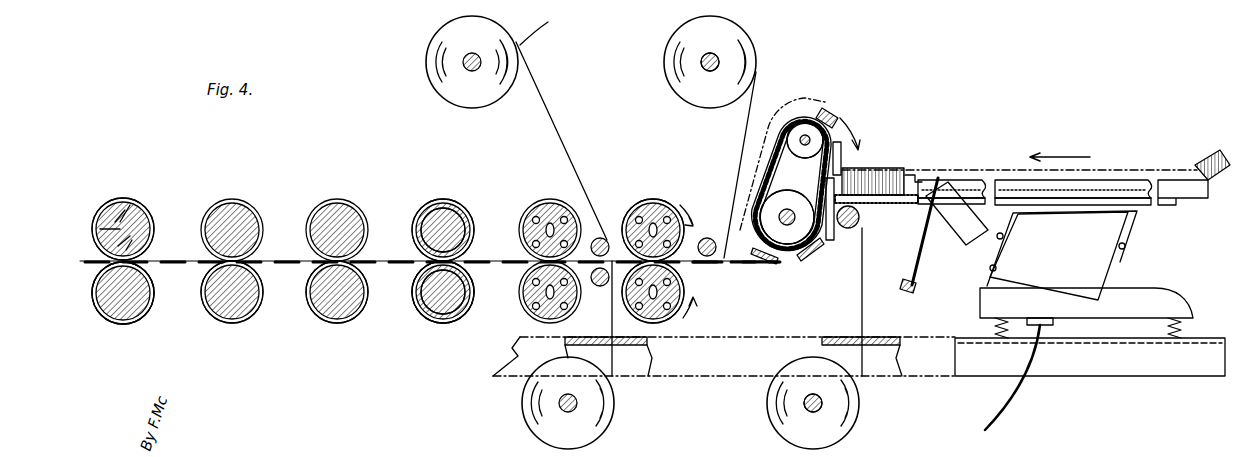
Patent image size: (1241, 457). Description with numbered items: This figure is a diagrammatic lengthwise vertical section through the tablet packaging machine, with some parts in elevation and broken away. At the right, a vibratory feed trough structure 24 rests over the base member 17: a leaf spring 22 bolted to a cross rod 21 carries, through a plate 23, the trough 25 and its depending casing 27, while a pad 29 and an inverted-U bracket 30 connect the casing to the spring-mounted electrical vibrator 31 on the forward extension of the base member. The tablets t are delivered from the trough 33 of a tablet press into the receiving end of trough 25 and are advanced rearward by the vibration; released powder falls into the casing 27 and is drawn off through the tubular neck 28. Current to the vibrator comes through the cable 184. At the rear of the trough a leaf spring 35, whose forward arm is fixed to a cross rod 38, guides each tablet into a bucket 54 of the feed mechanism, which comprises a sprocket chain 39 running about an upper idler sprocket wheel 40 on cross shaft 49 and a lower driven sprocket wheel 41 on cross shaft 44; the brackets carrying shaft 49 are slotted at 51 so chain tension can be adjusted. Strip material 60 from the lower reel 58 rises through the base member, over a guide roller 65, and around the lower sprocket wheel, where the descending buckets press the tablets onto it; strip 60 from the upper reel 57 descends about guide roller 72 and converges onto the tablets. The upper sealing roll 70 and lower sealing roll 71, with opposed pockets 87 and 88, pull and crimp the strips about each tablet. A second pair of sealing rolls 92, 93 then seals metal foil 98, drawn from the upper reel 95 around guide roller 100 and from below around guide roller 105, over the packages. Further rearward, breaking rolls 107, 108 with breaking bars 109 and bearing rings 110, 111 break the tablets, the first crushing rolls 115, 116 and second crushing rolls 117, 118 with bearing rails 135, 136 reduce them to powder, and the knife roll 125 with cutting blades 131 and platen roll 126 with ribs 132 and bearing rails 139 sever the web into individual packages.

The base member 17 is at (1155, 370).
The cross rod 21 is at (908, 292).
The leaf spring 22 is at (908, 265).
The plate 23 is at (926, 225).
The feed trough structure 24 is at (962, 178).
The trough 25 is at (903, 176).
The casing 27 is at (1098, 180).
The tubular neck 28 is at (962, 240).
The plate or pad 29 is at (1065, 206).
The depending bracket 30 is at (1136, 226).
The electrical vibrator 31 is at (1175, 290).
The trough 33 is at (1205, 168).
The leaf spring 35 is at (836, 222).
The cross rod 38 is at (852, 206).
The sprocket chain 39 is at (784, 120).
The upper idler sprocket wheel 40 is at (806, 122).
The lower driven sprocket wheel 41 is at (790, 235).
The cross shaft 44 is at (785, 245).
The cross shaft 49 is at (804, 150).
The slot 51 is at (838, 110).
The bucket 54 is at (810, 256).
The upper reel 57 is at (720, 63).
The lower reel 58 is at (806, 412).
The roll of thermal bonding material 60 is at (832, 420).
The guide roller 65 is at (860, 222).
The upper sealing roll 70 is at (645, 202).
The lower sealing roll 71 is at (668, 322).
The guide roller 72 is at (705, 238).
The pocket or recess 87 is at (658, 200).
The pocket or recess 88 is at (656, 322).
The upper sealing roll of second pair 92 is at (533, 208).
The lower sealing roll of second pair 93 is at (530, 306).
The upper reel 95 is at (462, 62).
The roll of metal foil 98 is at (612, 373).
The guide roller 100 is at (596, 238).
The guide roller 105 is at (600, 288).
The upper breaking roll 107 is at (445, 206).
The lower breaking roll 108 is at (446, 318).
The breaking bars 109 is at (428, 318).
The bearing ring 110 is at (418, 215).
The bearing ring 111 is at (416, 303).
The upper crushing roll 115 is at (336, 207).
The lower crushing roll 116 is at (338, 314).
The upper crushing roll of second pair 117 is at (238, 208).
The lower crushing roll of second pair 118 is at (240, 308).
The knife roll 125 is at (132, 205).
The platen roll 126 is at (143, 311).
The cutting blades 131 is at (150, 216).
The bars or ribs 132 is at (118, 322).
The bearing rails 135 is at (320, 318).
The bearing rails 136 is at (218, 318).
The bearing rails 139 is at (136, 322).
The cable 184 is at (1010, 402).
The tablets t is at (884, 168).